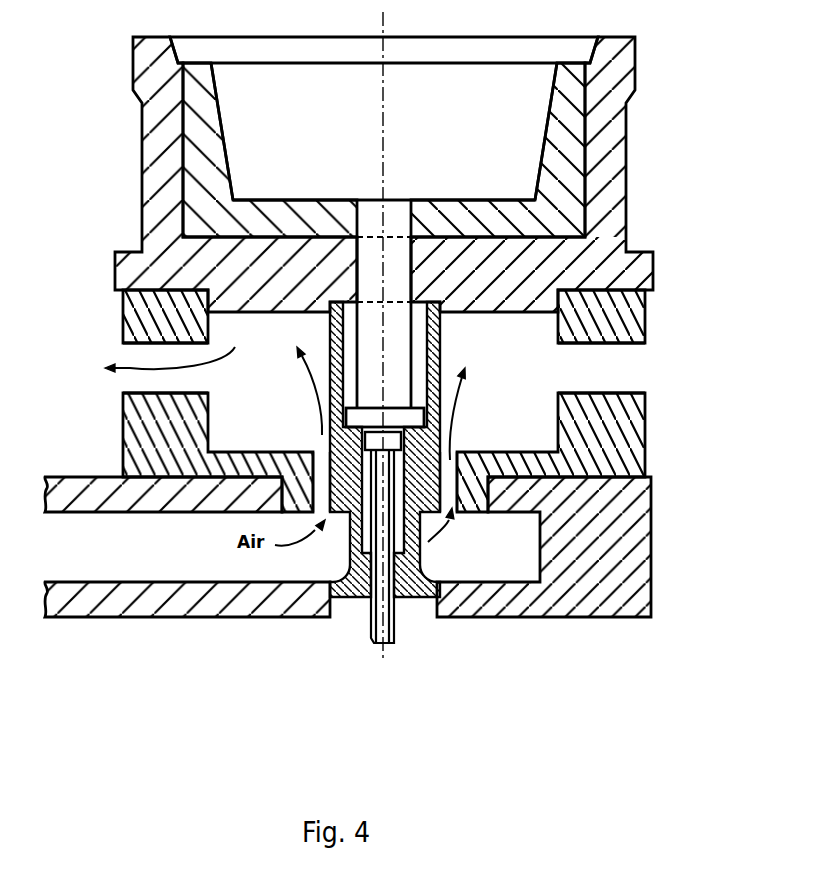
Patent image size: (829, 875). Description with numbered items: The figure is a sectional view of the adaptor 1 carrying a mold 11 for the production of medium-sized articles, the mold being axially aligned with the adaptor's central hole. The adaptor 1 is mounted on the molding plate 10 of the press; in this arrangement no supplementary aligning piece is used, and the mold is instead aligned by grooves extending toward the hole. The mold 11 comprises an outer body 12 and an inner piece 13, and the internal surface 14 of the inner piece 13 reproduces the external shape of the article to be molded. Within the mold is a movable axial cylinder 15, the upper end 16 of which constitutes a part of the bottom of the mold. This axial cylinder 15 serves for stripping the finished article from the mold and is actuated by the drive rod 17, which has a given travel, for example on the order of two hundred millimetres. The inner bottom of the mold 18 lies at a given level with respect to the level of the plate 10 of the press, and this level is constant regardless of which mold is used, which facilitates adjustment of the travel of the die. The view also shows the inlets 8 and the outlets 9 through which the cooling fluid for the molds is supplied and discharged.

The adaptor 1 is at (620, 435).
The inlets 8 is at (320, 460).
The outlets 9 is at (143, 388).
The molding plate 10 is at (627, 522).
The mold 11 is at (632, 122).
The outer body 12 is at (607, 150).
The inner piece 13 is at (567, 208).
The internal surface 14 is at (545, 97).
The movable axial cylinder 15 is at (647, 372).
The upper end 16 is at (400, 187).
The drive rod 17 is at (371, 640).
The inner bottom of the mold 18 is at (290, 189).